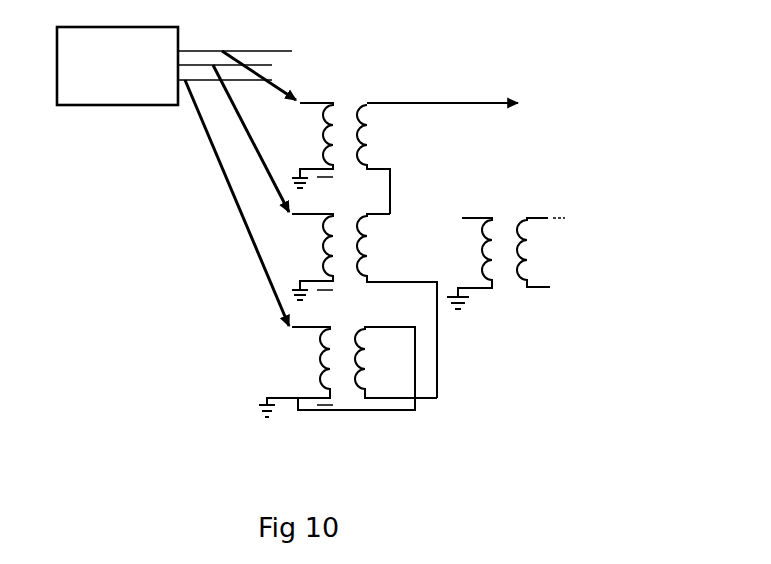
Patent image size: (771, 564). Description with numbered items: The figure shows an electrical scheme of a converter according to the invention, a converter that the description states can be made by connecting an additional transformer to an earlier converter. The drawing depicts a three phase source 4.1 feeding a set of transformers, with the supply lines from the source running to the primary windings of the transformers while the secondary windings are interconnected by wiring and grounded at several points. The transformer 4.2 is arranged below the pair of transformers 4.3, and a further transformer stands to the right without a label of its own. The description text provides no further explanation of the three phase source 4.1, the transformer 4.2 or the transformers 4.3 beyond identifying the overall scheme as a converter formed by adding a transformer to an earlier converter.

The three phase source 4.1 is at (136, 119).
The transformer Tr3 4.2 is at (224, 381).
The transformers Tr1 and Tr2 4.3 is at (428, 157).